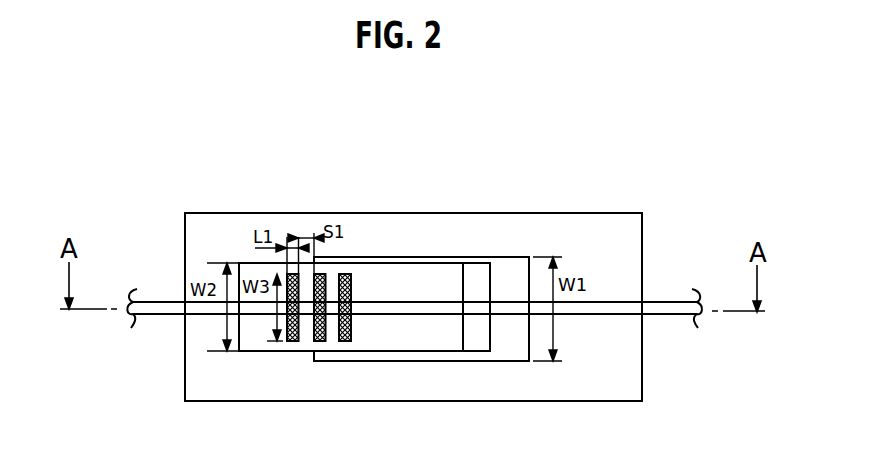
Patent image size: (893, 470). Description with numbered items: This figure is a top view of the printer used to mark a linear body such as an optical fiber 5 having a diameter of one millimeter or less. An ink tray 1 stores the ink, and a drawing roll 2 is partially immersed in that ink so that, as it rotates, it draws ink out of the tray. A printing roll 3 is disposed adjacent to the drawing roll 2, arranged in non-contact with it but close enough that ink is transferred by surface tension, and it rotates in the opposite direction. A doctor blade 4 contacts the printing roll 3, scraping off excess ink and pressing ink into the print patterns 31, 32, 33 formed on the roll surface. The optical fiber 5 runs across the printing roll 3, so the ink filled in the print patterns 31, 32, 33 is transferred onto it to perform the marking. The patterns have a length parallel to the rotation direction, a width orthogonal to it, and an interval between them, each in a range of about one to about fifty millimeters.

The ink tray 1 is at (593, 213).
The drawing roll 2 is at (503, 275).
The printing roll 3 is at (392, 272).
The doctor blade 4 is at (473, 277).
The optical fiber 5 is at (667, 303).
The print pattern 31 is at (293, 342).
The print pattern 32 is at (319, 342).
The print pattern 33 is at (344, 342).